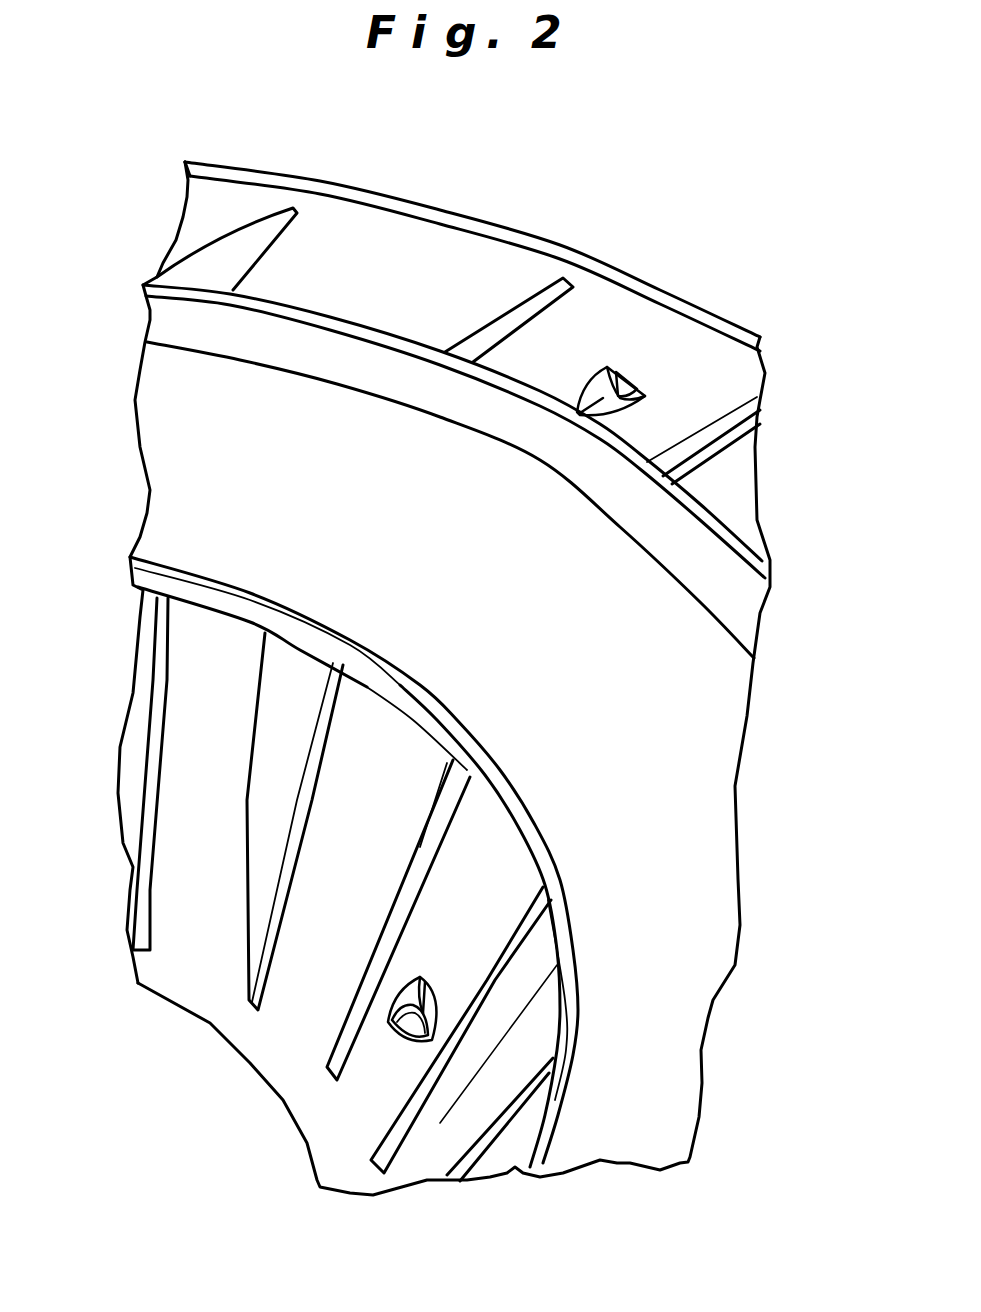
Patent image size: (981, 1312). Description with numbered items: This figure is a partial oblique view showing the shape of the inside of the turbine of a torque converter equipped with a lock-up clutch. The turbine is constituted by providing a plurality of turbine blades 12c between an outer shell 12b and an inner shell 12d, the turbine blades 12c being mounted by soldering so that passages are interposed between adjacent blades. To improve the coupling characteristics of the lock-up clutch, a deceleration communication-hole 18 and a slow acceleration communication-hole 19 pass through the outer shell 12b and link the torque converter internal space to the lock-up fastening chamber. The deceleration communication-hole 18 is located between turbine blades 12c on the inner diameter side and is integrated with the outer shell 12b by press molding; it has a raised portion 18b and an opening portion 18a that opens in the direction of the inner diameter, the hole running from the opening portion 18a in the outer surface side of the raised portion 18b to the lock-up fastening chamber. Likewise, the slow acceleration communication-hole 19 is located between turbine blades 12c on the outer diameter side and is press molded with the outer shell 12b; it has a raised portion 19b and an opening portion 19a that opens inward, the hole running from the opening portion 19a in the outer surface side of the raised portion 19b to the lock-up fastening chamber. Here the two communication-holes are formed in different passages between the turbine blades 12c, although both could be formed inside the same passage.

The outer shell 12b is at (680, 297).
The turbine blades 12c is at (250, 232).
The inner shell 12d is at (712, 731).
The deceleration communication-hole 18 is at (279, 1088).
The opening portion 18a is at (400, 1033).
The raised portion 18b is at (398, 1010).
The slow acceleration communication-hole 19 is at (682, 280).
The opening portion 19a is at (628, 383).
The raised portion 19b is at (585, 368).